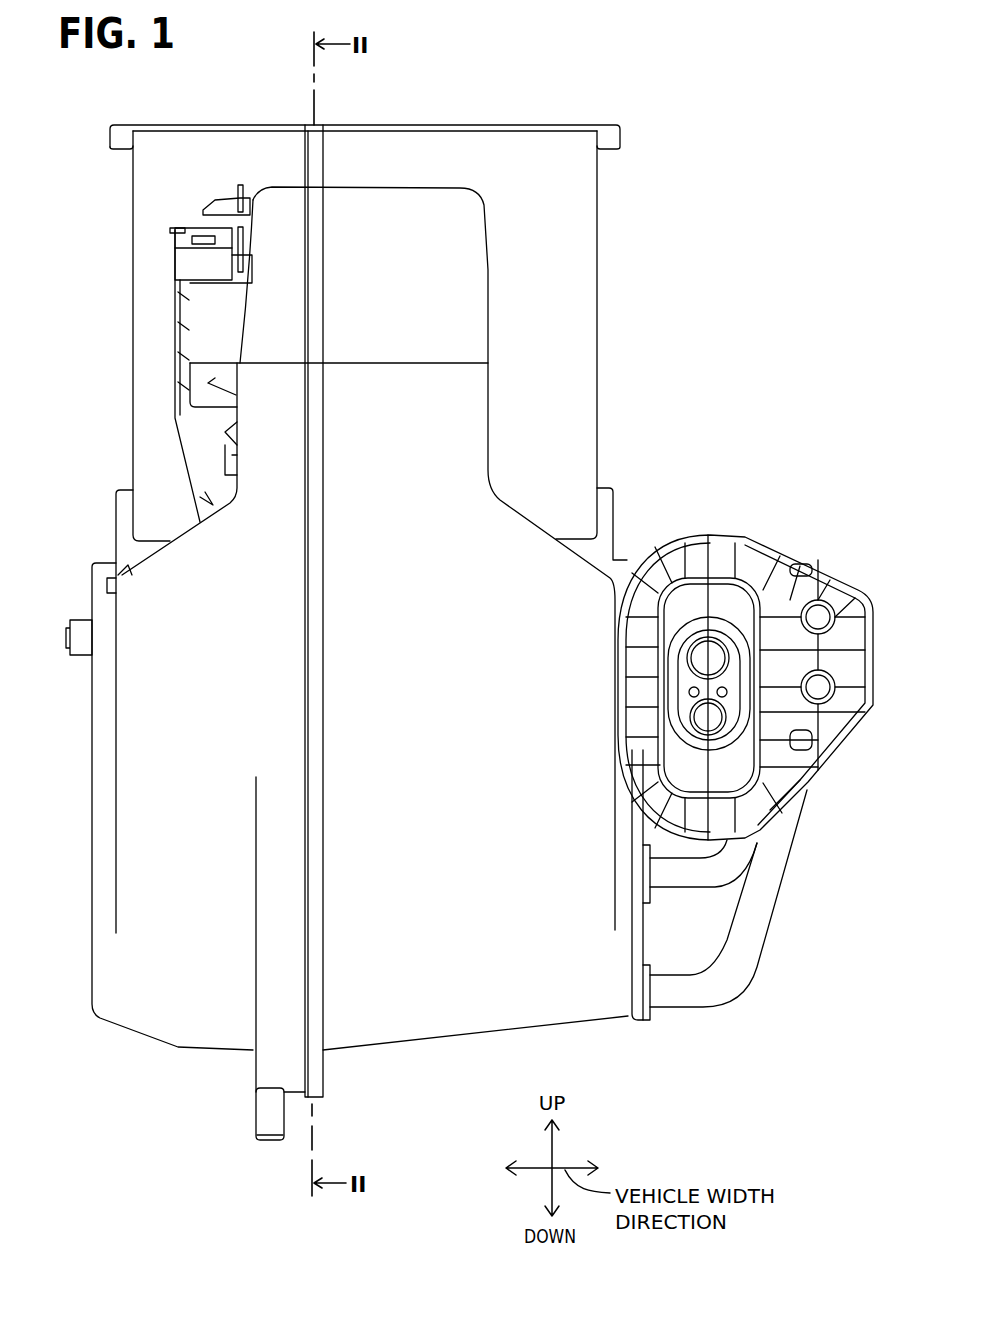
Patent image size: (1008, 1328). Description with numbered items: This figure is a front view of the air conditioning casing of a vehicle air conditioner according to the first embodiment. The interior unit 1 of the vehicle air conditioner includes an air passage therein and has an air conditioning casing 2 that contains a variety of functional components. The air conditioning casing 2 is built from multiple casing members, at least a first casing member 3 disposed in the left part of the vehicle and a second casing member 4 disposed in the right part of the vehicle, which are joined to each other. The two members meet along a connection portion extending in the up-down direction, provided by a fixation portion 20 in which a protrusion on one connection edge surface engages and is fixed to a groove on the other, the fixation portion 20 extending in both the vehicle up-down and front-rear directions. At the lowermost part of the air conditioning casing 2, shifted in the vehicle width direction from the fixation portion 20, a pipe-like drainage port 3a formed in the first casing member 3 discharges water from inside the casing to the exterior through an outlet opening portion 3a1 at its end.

The interior unit 1 is at (656, 194).
The air conditioning casing 2 is at (521, 121).
The first casing member 3 is at (155, 617).
The drainage port 3a is at (256, 1116).
The outlet opening portion 3a1 is at (270, 1142).
The second casing member 4 is at (520, 540).
The fixation portion 20 is at (326, 1098).